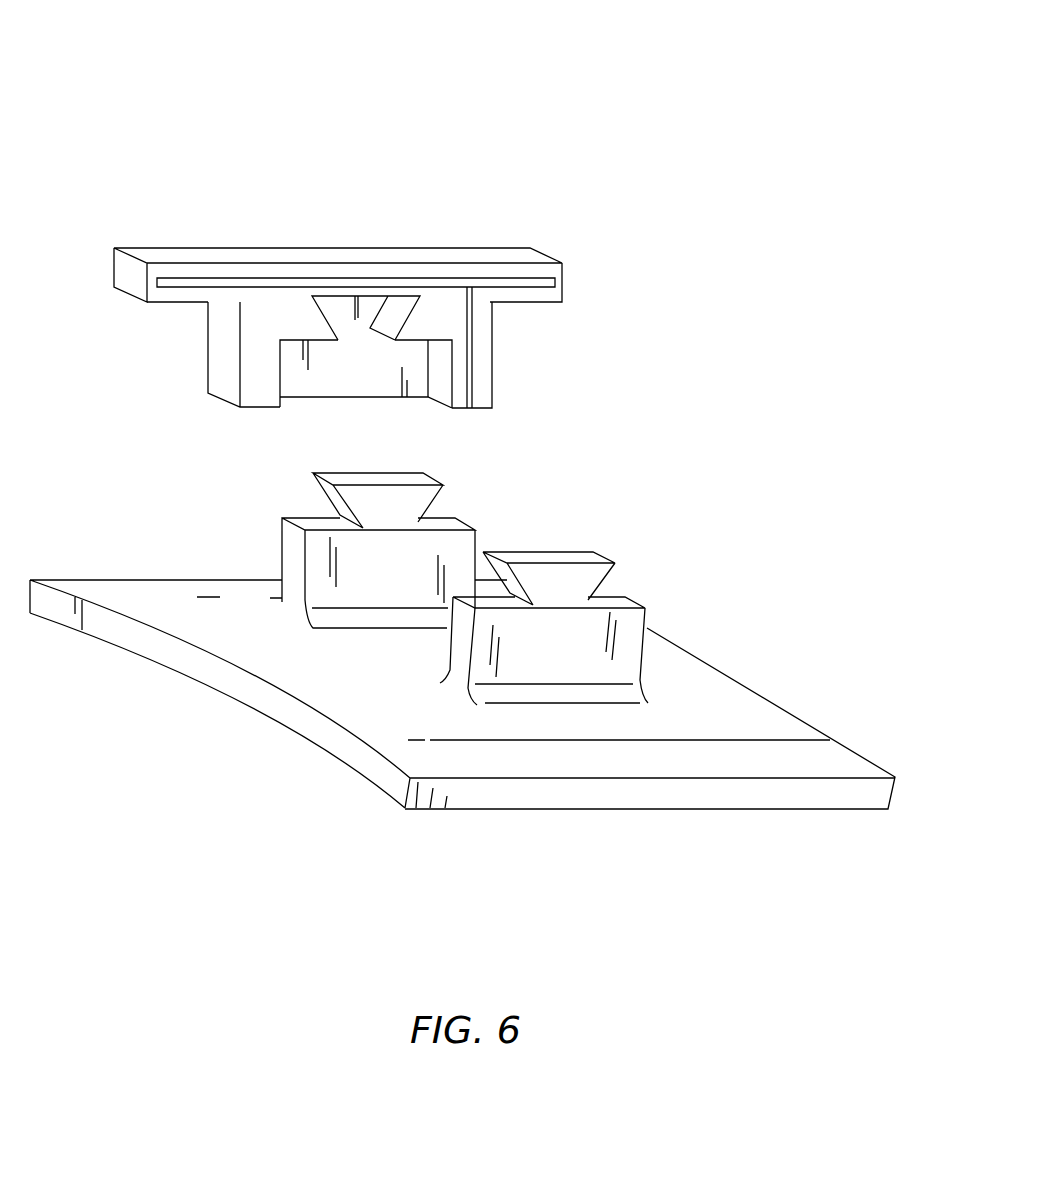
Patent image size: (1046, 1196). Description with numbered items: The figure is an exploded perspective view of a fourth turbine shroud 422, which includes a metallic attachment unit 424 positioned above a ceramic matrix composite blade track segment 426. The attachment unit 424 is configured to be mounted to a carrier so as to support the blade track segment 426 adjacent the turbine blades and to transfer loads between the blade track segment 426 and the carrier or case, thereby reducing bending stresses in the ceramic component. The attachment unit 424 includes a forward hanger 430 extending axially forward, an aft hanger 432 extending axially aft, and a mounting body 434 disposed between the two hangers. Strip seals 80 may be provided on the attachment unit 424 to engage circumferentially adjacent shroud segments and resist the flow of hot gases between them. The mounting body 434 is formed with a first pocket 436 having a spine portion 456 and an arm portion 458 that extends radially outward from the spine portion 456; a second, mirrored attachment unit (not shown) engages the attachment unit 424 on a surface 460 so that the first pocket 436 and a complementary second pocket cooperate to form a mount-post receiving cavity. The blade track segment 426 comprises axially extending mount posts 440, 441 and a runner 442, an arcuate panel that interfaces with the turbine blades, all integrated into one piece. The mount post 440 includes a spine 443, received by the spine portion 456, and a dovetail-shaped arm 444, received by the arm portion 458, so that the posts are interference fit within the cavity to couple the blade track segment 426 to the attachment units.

The turbine shroud 422 is at (106, 103).
The attachment unit 424 is at (510, 150).
The forward hanger 430 is at (164, 233).
The aft hanger 432 is at (505, 235).
The mounting body 434 is at (512, 362).
The strip seals 80 is at (390, 280).
The first pocket 436 is at (392, 405).
The arm portion 458 is at (335, 307).
The spine portion 456 is at (333, 390).
The surface 460 is at (255, 390).
The ceramic matrix composite blade track segment 426 is at (265, 845).
The runner 442 is at (282, 709).
The mount post 440 is at (243, 497).
The dovetail-shaped arm 444 is at (461, 486).
The spine 443 is at (492, 529).
The mount post 441 is at (481, 726).